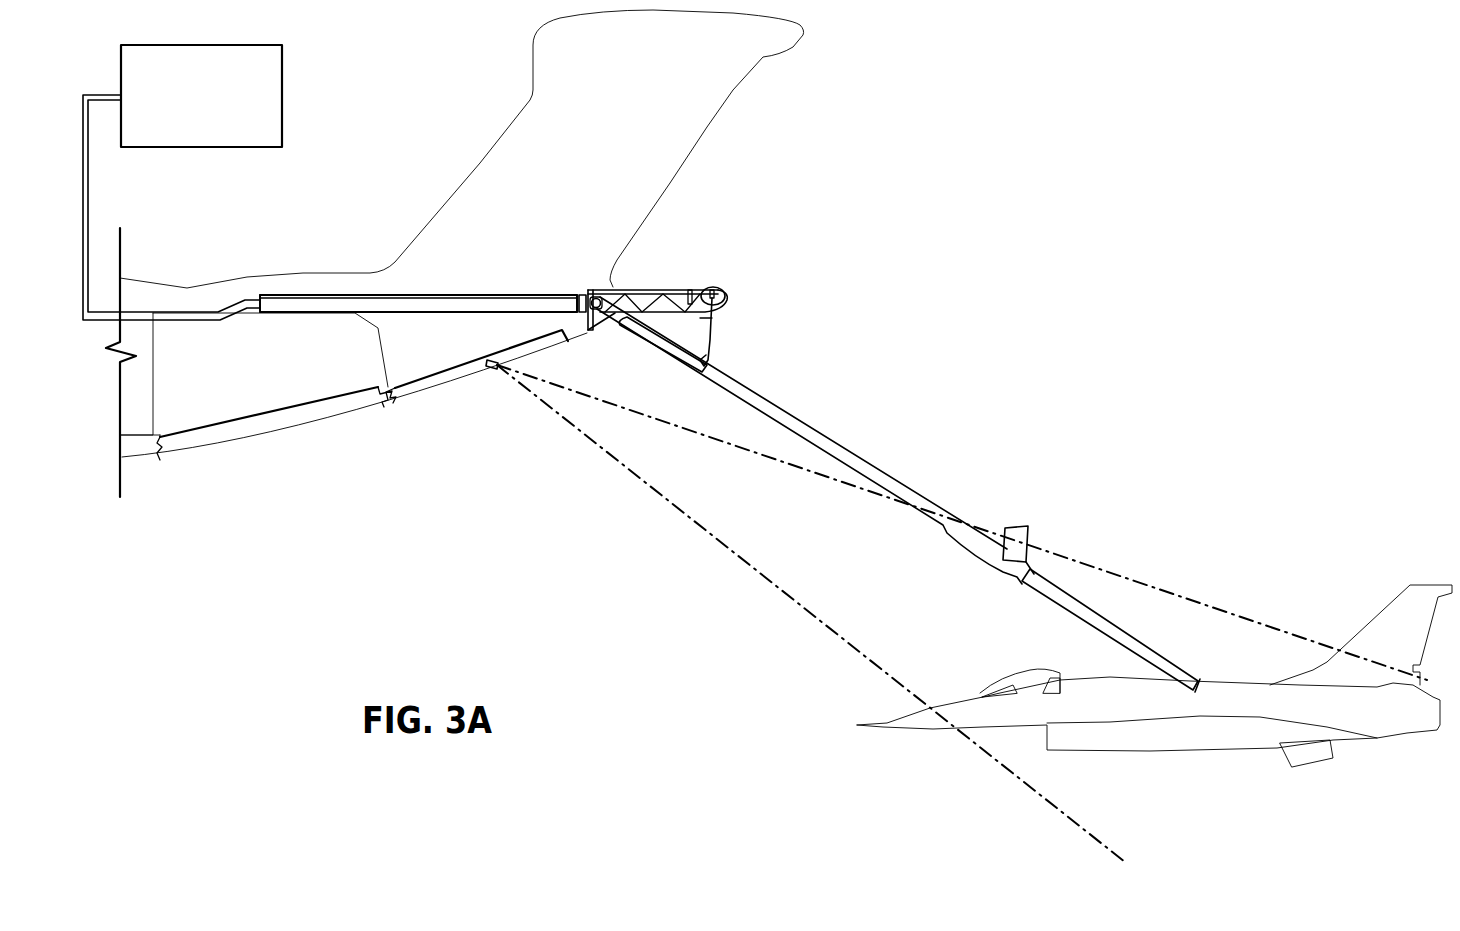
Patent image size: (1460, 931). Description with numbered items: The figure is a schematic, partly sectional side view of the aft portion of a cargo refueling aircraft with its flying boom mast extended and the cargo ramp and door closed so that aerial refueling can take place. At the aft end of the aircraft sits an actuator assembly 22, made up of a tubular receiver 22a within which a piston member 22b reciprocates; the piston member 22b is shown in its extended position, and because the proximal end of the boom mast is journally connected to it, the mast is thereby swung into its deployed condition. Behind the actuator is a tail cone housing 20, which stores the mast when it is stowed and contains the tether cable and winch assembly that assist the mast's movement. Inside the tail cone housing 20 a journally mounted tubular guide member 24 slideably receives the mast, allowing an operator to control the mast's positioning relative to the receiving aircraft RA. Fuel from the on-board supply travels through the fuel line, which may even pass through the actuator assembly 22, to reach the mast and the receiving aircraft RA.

The tail cone housing 20 is at (666, 278).
The actuator assembly 22 is at (459, 283).
The tubular receiver 22a is at (370, 298).
The piston member 22b is at (588, 292).
The tubular guide member 24 is at (619, 316).
The receiving aircraft RA is at (1261, 726).